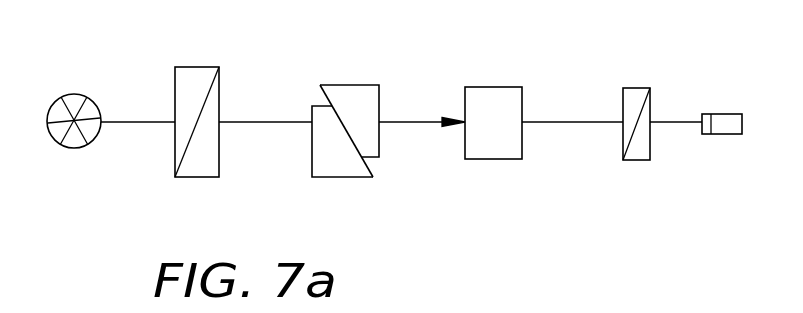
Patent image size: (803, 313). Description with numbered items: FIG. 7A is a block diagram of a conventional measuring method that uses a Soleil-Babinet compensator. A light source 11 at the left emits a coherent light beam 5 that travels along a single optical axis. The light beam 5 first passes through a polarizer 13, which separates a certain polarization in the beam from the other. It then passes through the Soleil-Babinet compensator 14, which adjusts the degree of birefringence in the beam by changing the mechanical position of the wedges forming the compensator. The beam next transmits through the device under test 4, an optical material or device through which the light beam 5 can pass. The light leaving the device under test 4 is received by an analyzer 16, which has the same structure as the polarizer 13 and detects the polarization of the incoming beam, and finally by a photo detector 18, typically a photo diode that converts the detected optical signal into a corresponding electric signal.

The light source 11 is at (74, 93).
The coherent light beam 5 is at (153, 123).
The polarizer 13 is at (201, 66).
The Soleil-Babinet compensator 14 is at (338, 85).
The device under test 4 is at (480, 87).
The analyzer 16 is at (633, 88).
The photo detector 18 is at (717, 114).